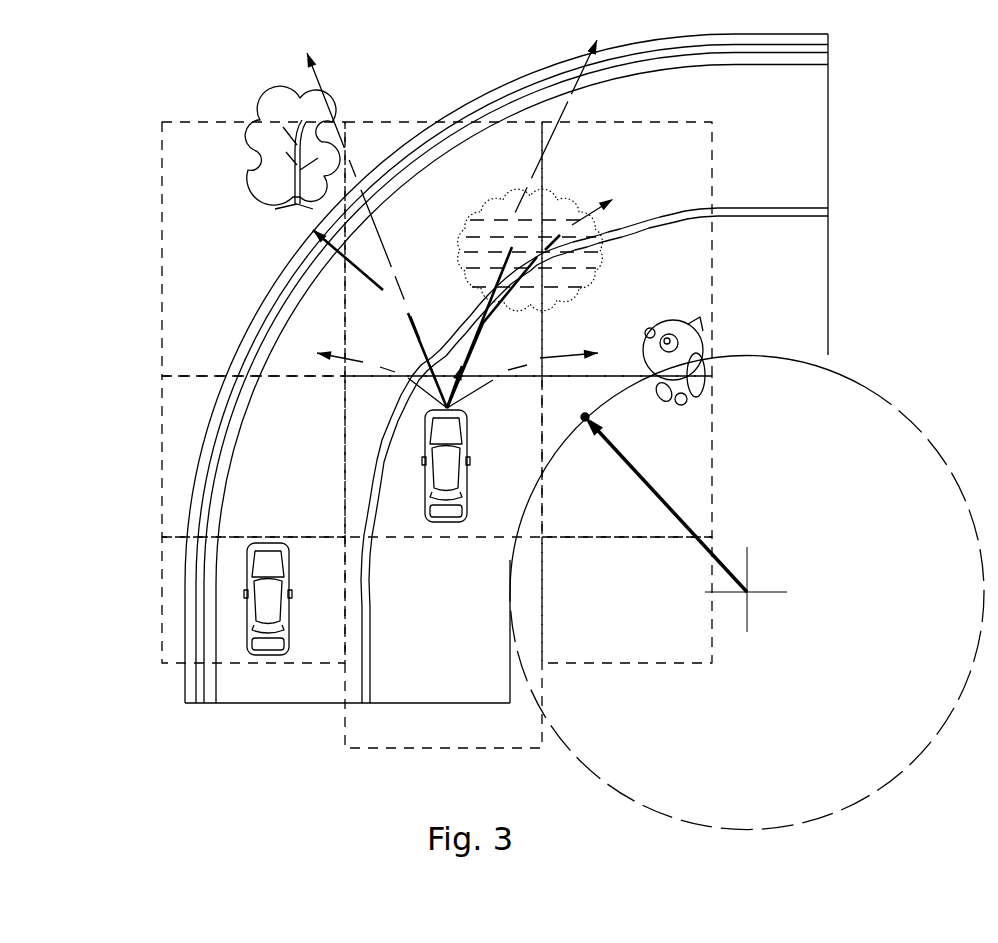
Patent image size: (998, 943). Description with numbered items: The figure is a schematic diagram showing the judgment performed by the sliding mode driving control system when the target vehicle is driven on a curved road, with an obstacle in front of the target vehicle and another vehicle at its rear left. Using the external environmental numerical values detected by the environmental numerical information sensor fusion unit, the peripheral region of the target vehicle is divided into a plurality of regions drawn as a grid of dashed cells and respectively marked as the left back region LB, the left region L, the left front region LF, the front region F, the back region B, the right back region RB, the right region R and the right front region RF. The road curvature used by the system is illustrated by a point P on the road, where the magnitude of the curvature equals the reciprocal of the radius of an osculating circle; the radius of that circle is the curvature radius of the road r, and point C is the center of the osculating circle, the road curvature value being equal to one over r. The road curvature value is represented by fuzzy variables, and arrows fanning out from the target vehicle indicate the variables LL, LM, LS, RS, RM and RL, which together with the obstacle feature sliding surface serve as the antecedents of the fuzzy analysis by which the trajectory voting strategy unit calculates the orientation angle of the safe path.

The left small curvature fuzzy variable LS is at (364, 214).
The right small curvature fuzzy variable RS is at (535, 208).
The right medium curvature fuzzy variable RM is at (553, 294).
The left medium curvature fuzzy variable LM is at (325, 249).
The left front region LF is at (253, 249).
The front region F is at (443, 265).
The right front region RF is at (627, 249).
The left large curvature fuzzy variable LL is at (366, 373).
The right large curvature fuzzy variable RL is at (544, 373).
The point on the road P is at (576, 401).
The left region L is at (253, 456).
The right region R is at (627, 456).
The curvature radius of the road r is at (666, 504).
The left back region LB is at (253, 600).
The back region B is at (443, 579).
The right back region RB is at (627, 600).
The center of the osculating circle C is at (746, 589).